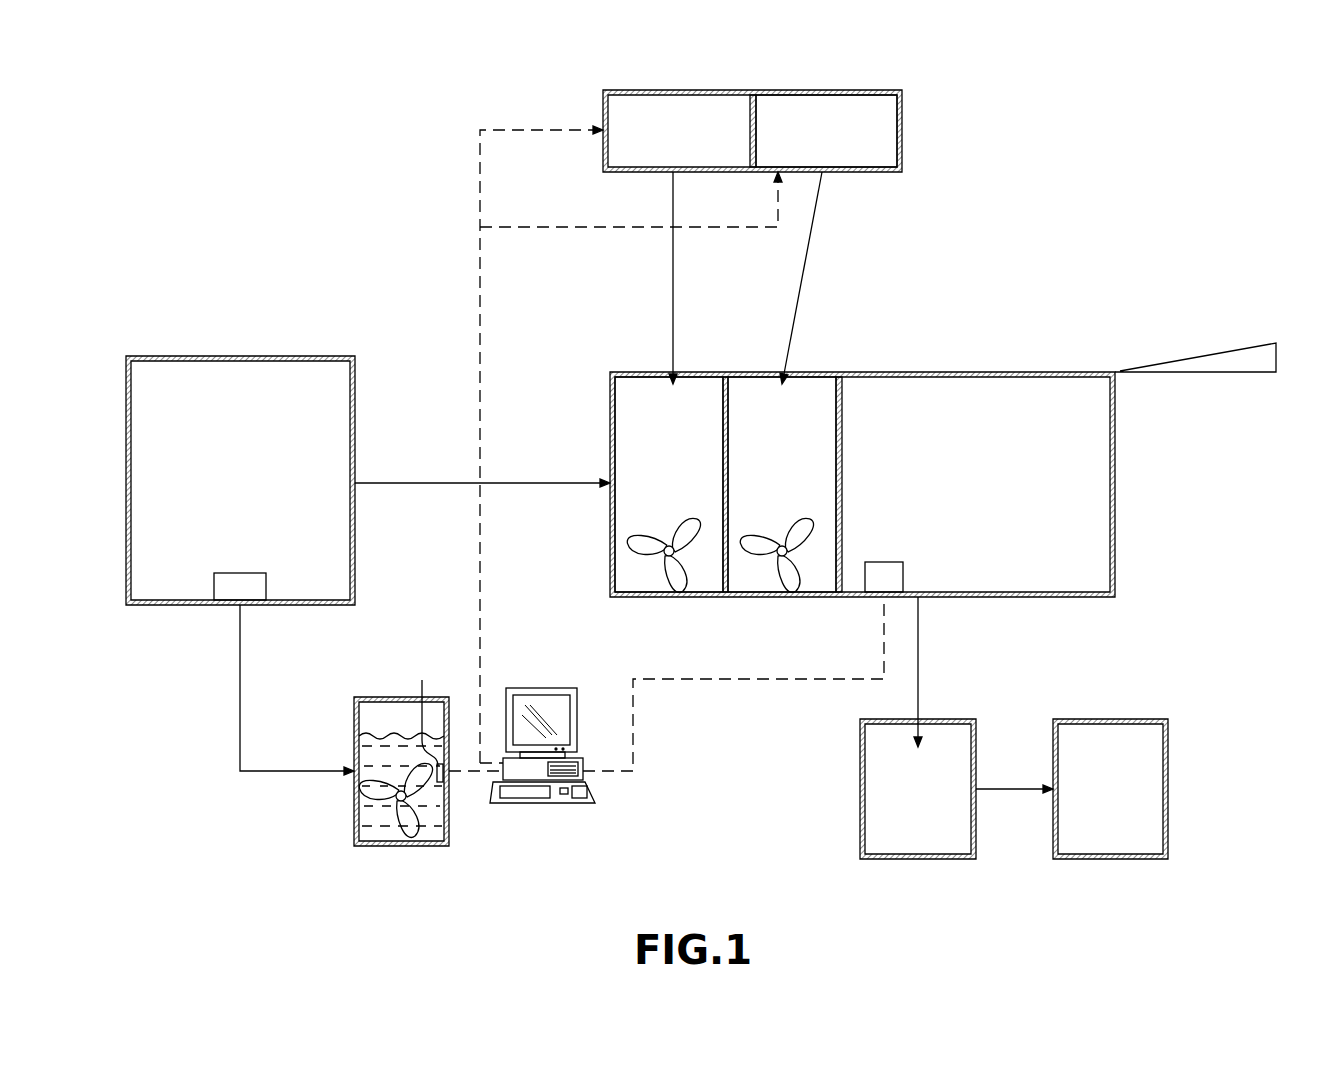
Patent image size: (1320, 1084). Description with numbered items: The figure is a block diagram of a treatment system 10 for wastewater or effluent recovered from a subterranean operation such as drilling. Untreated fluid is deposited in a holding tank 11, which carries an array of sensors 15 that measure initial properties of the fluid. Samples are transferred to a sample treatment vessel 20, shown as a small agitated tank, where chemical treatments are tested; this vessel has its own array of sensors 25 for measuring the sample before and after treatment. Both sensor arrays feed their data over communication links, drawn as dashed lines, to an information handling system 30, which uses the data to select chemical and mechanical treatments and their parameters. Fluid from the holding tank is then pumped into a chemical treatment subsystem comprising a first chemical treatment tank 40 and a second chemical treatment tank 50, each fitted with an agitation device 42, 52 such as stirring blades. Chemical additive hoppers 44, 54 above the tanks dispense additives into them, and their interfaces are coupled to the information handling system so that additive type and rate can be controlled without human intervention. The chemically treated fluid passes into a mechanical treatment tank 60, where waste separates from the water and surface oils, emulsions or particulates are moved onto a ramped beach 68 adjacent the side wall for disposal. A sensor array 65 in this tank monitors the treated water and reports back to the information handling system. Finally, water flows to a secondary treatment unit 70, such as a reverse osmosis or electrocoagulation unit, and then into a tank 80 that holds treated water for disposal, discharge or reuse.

The treatment system 10 is at (1168, 164).
The holding tank 11 is at (238, 388).
The array of sensors 15 is at (233, 585).
The sample treatment vessel 20 is at (400, 847).
The array of sensors 25 is at (432, 712).
The information handling system 30 is at (583, 777).
The first chemical treatment tank 40 is at (673, 520).
The agitation device 42 is at (668, 535).
The chemical additive hopper 44 is at (712, 118).
The second chemical treatment tank 50 is at (785, 520).
The agitation device 52 is at (780, 535).
The chemical additive hopper 54 is at (825, 112).
The mechanical treatment tank 60 is at (1115, 492).
The sensor array 65 is at (893, 562).
The beach 68 is at (1203, 356).
The secondary treatment unit 70 is at (934, 860).
The tank 80 is at (1112, 860).